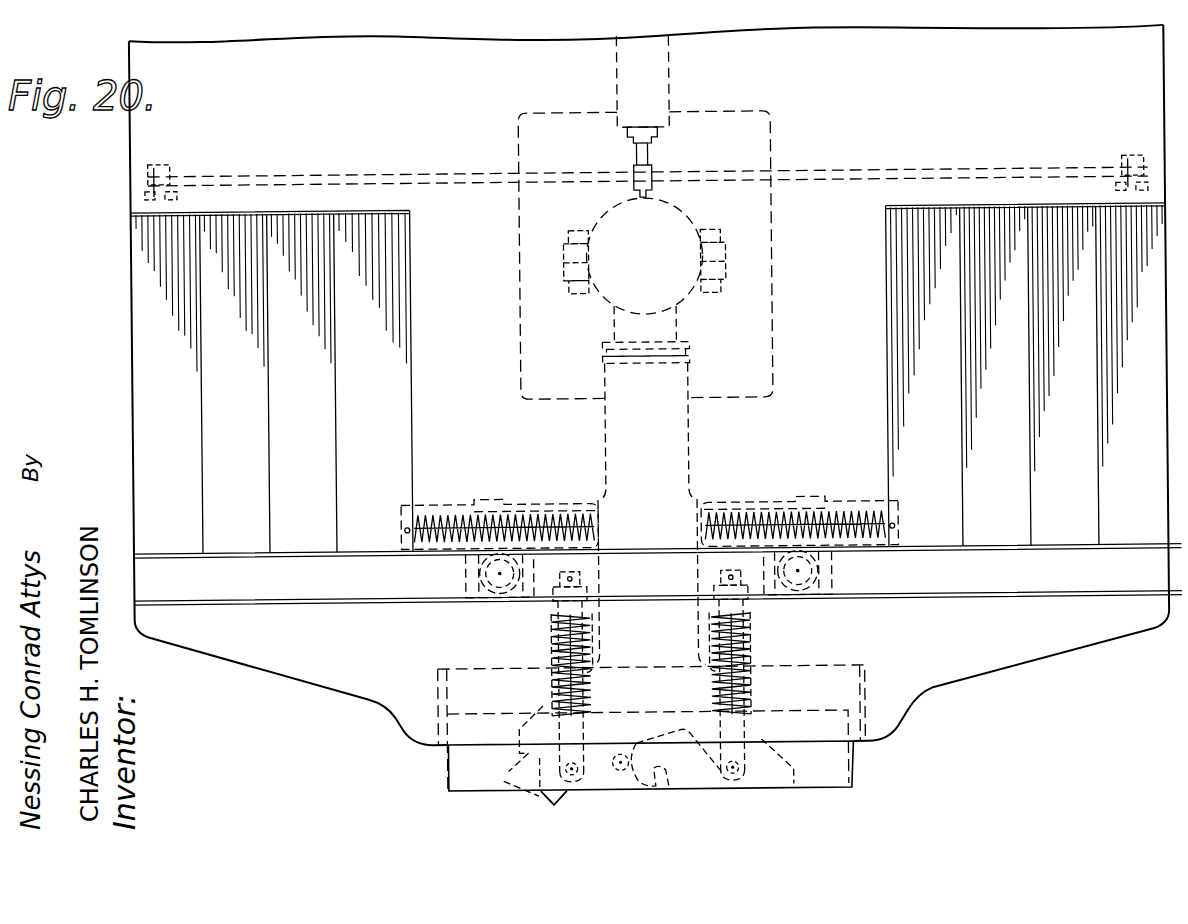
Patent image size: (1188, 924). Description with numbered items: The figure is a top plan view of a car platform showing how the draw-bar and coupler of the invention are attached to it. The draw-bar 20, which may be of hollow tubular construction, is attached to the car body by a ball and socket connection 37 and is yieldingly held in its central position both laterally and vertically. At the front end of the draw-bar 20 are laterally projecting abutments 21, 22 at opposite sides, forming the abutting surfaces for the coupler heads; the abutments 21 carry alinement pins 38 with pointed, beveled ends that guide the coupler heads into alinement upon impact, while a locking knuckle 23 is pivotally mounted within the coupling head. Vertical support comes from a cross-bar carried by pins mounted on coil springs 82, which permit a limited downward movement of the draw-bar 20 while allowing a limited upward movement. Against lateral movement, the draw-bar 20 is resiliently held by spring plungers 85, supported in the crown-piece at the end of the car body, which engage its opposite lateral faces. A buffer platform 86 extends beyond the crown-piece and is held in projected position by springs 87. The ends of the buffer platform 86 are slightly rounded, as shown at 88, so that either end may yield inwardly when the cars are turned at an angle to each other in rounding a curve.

The draw-bar 20 is at (683, 441).
The laterally projecting abutment 21 is at (523, 752).
The laterally projecting abutment 22 is at (770, 790).
The locking knuckle 23 is at (650, 790).
The ball and socket connection 37 is at (673, 222).
The alinement pin 38 is at (535, 790).
The coil spring 82 is at (478, 572).
The spring plunger 85 is at (548, 505).
The buffer platform 86 is at (826, 773).
The spring 87 is at (548, 637).
The rounded end 88 is at (444, 762).